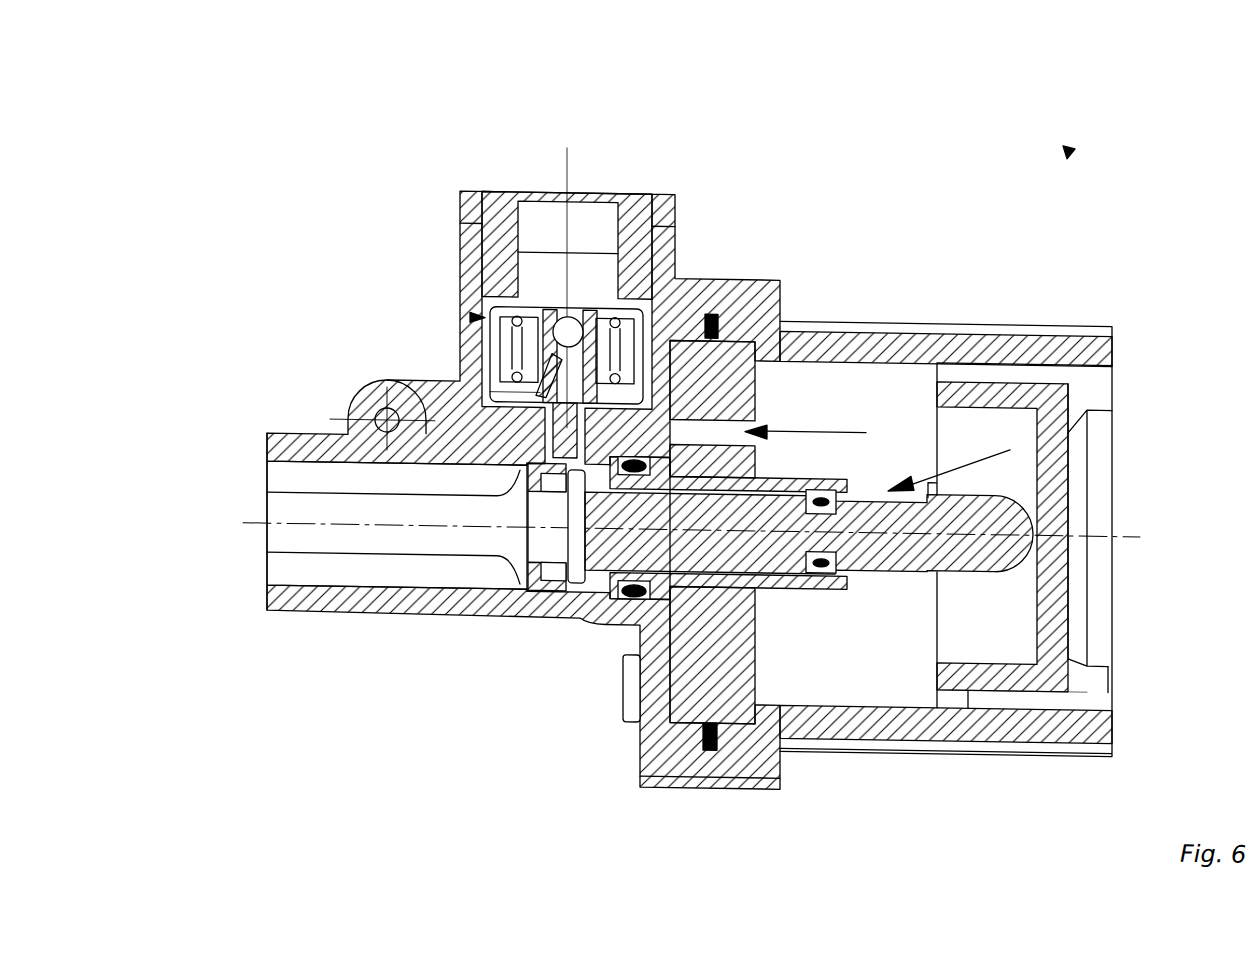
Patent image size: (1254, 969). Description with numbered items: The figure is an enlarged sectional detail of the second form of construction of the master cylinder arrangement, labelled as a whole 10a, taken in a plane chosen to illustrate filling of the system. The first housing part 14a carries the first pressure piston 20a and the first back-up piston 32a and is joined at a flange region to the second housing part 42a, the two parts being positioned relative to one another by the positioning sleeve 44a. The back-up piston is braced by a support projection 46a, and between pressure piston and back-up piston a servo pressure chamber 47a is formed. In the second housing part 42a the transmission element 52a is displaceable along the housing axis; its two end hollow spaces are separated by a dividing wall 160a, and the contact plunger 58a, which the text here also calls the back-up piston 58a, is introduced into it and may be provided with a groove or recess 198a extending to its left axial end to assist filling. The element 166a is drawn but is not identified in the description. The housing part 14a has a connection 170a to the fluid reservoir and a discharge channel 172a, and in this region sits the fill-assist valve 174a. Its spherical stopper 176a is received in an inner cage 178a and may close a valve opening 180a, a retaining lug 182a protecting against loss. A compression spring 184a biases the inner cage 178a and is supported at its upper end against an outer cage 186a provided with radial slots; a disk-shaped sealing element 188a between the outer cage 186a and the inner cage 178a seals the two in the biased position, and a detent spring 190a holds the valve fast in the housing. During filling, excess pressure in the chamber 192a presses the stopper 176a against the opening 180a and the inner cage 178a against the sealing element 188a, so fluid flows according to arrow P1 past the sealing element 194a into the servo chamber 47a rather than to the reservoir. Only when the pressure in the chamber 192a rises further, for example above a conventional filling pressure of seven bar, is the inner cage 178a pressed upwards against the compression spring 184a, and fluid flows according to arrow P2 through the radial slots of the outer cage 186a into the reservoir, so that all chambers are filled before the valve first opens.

The actuating device 10a is at (1070, 148).
The first housing part 14a is at (353, 608).
The first pressure piston 20a is at (290, 551).
The first back-up piston 32a is at (845, 405).
The second housing part 42a is at (1050, 333).
The positioning sleeve 44a is at (762, 278).
The support projection 46a is at (593, 602).
The servo pressure chamber 47a is at (548, 603).
The transmission element 52a is at (1100, 393).
The contact plunger 58a is at (1012, 555).
The dividing wall 160a is at (1060, 490).
The retaining ring 166a is at (1103, 695).
The connection to the fluid reservoir 170a is at (560, 303).
The discharge channel 172a is at (738, 357).
The fill-assist valve 174a is at (490, 330).
The spherical stopper 176a is at (586, 346).
The inner cage 178a is at (706, 312).
The valve opening 180a is at (566, 322).
The retaining lug 182a is at (500, 356).
The compression spring 184a is at (490, 300).
The outer cage 186a is at (459, 197).
The disk-shaped sealing element 188a is at (492, 392).
The detent spring 190a is at (468, 323).
The chamber 192a is at (862, 675).
The sealing element 194a is at (826, 581).
The groove or recess 198a is at (1083, 407).
The arrow P1 is at (912, 481).
The arrow P2 is at (866, 430).